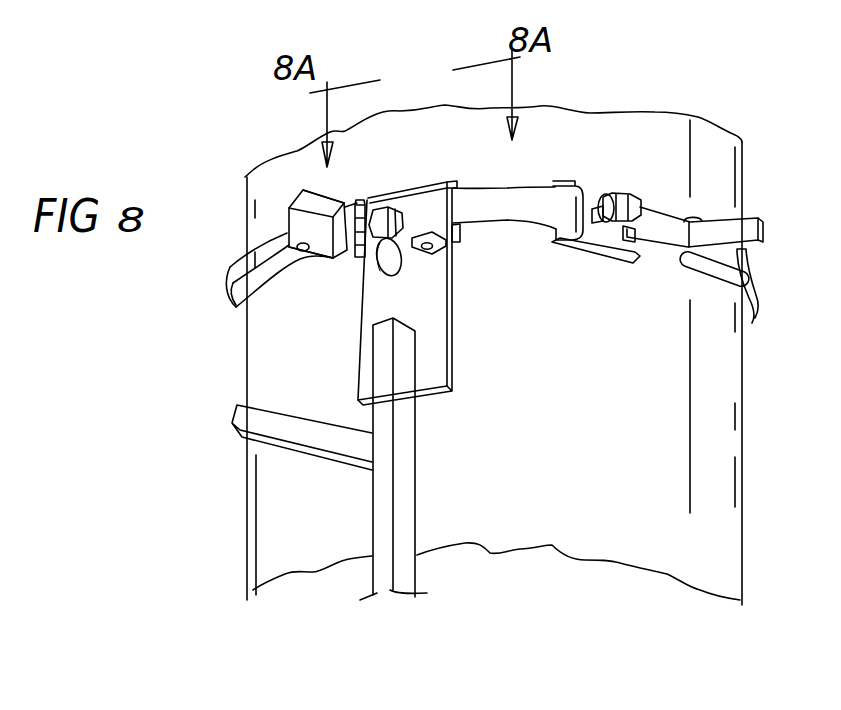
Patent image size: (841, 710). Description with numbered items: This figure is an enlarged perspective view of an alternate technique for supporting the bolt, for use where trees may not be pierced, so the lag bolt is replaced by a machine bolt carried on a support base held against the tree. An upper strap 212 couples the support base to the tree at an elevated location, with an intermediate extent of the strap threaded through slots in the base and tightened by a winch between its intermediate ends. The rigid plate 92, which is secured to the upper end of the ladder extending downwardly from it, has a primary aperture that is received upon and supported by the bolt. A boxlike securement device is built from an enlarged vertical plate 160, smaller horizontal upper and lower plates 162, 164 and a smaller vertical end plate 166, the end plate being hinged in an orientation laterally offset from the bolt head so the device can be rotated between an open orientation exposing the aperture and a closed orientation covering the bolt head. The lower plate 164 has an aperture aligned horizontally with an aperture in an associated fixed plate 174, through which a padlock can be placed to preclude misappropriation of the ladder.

The rigid plate 92 is at (442, 343).
The enlarged vertical plate 160 is at (288, 210).
The upper plate 162 is at (304, 200).
The lower plate 164 is at (333, 258).
The vertical end plate 166 is at (356, 257).
The fixed plate 174 is at (446, 242).
The upper strap 212 is at (537, 205).